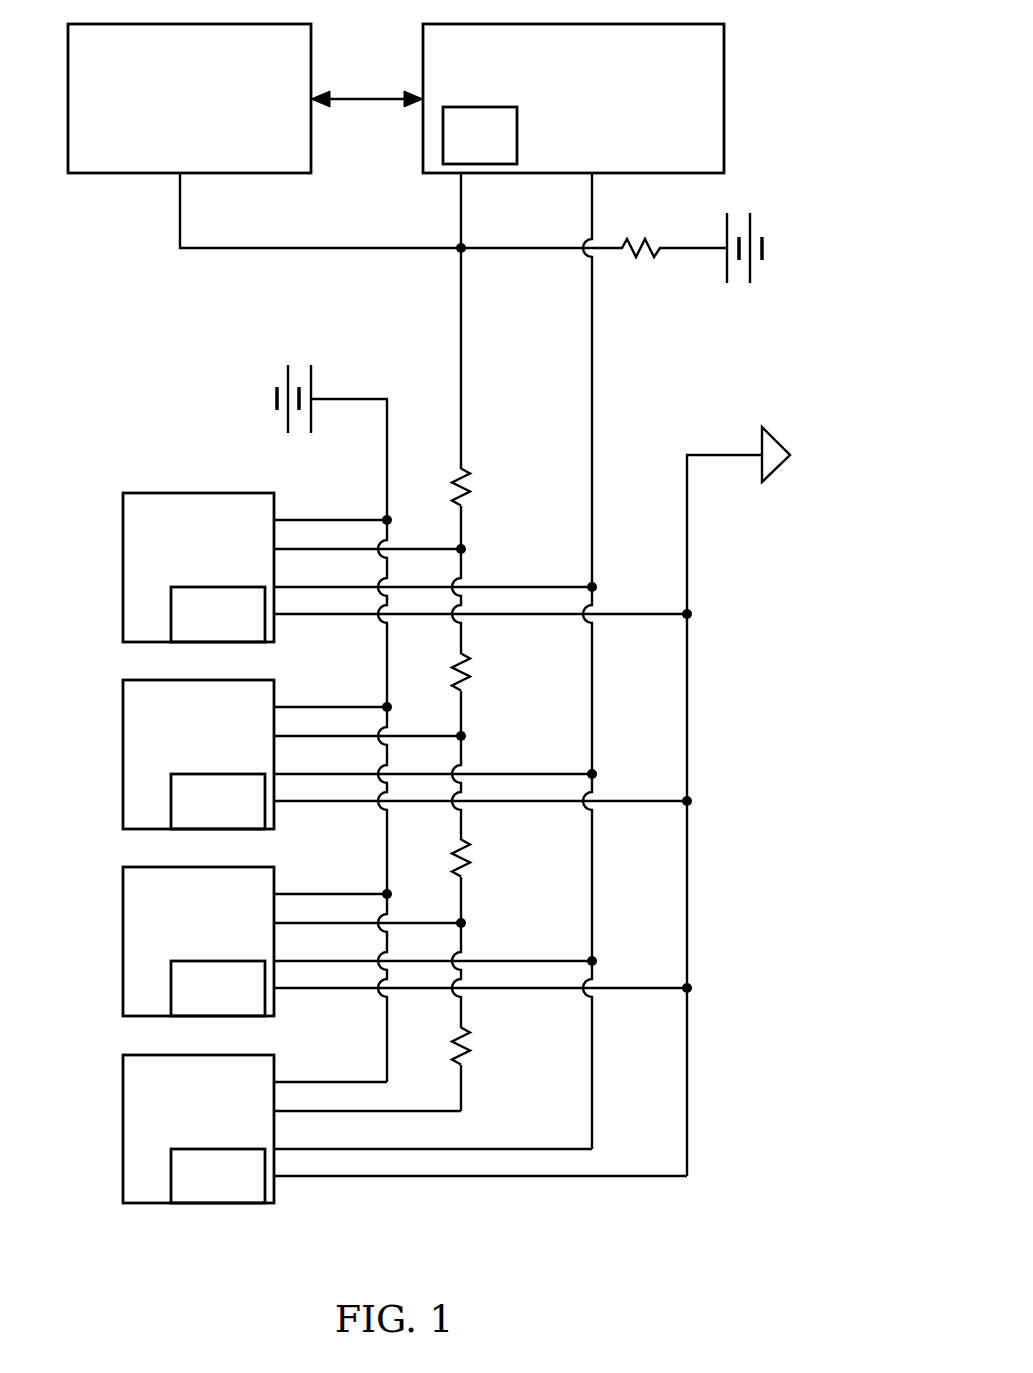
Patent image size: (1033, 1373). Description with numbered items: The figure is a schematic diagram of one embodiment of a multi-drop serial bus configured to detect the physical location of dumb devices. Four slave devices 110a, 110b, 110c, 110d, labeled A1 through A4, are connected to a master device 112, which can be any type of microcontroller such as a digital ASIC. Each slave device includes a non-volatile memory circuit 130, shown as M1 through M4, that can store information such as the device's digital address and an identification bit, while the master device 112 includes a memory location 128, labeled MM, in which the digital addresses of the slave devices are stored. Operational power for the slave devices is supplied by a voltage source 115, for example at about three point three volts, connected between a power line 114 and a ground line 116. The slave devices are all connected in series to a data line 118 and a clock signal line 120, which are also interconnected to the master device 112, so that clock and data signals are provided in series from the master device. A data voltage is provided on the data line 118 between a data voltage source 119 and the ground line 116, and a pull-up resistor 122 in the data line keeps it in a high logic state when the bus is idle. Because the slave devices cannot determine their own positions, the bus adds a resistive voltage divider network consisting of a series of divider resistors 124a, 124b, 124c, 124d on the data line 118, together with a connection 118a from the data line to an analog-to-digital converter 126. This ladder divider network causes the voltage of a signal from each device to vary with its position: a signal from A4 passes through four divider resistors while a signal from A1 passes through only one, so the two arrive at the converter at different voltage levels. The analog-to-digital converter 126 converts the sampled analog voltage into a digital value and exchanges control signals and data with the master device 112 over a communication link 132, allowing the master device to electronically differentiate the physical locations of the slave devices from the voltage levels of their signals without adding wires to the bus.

The slave device 110a is at (135, 565).
The slave device 110b is at (135, 747).
The slave device 110c is at (135, 930).
The slave device 110d is at (135, 1125).
The master device 112 is at (698, 123).
The power line 114 is at (386, 478).
The voltage source 115 is at (277, 387).
The ground line 116 is at (687, 567).
The data line 118 is at (461, 268).
The connection 118a is at (240, 248).
The data voltage source 119 is at (753, 222).
The clock signal line 120 is at (593, 413).
The pull-up resistor 122 is at (648, 257).
The divider resistor 124a is at (470, 488).
The divider resistor 124b is at (470, 673).
The divider resistor 124c is at (470, 859).
The divider resistor 124d is at (470, 1047).
The analog-to-digital converter 126 is at (115, 165).
The memory location 128 is at (463, 152).
The non-volatile memory circuit 130 is at (248, 627).
The communication link 132 is at (388, 97).